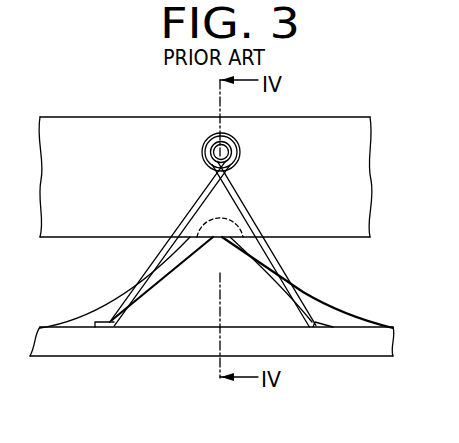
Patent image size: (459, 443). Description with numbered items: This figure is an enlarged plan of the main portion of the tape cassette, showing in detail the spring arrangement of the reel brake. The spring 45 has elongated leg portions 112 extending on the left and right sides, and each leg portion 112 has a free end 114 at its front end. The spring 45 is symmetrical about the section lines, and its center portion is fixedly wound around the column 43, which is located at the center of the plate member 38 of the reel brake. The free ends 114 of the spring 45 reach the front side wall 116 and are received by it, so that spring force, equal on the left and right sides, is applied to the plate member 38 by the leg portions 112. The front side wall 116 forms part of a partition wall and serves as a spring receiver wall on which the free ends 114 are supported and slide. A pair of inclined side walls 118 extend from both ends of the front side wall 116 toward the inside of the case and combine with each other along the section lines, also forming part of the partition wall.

The plate member 38 is at (332, 126).
The column 43 is at (218, 152).
The spring 45 is at (234, 230).
The leg portions 112 is at (190, 220).
The free ends 114 is at (105, 328).
The front side wall 116 is at (151, 344).
The inclined side walls 118 is at (105, 313).